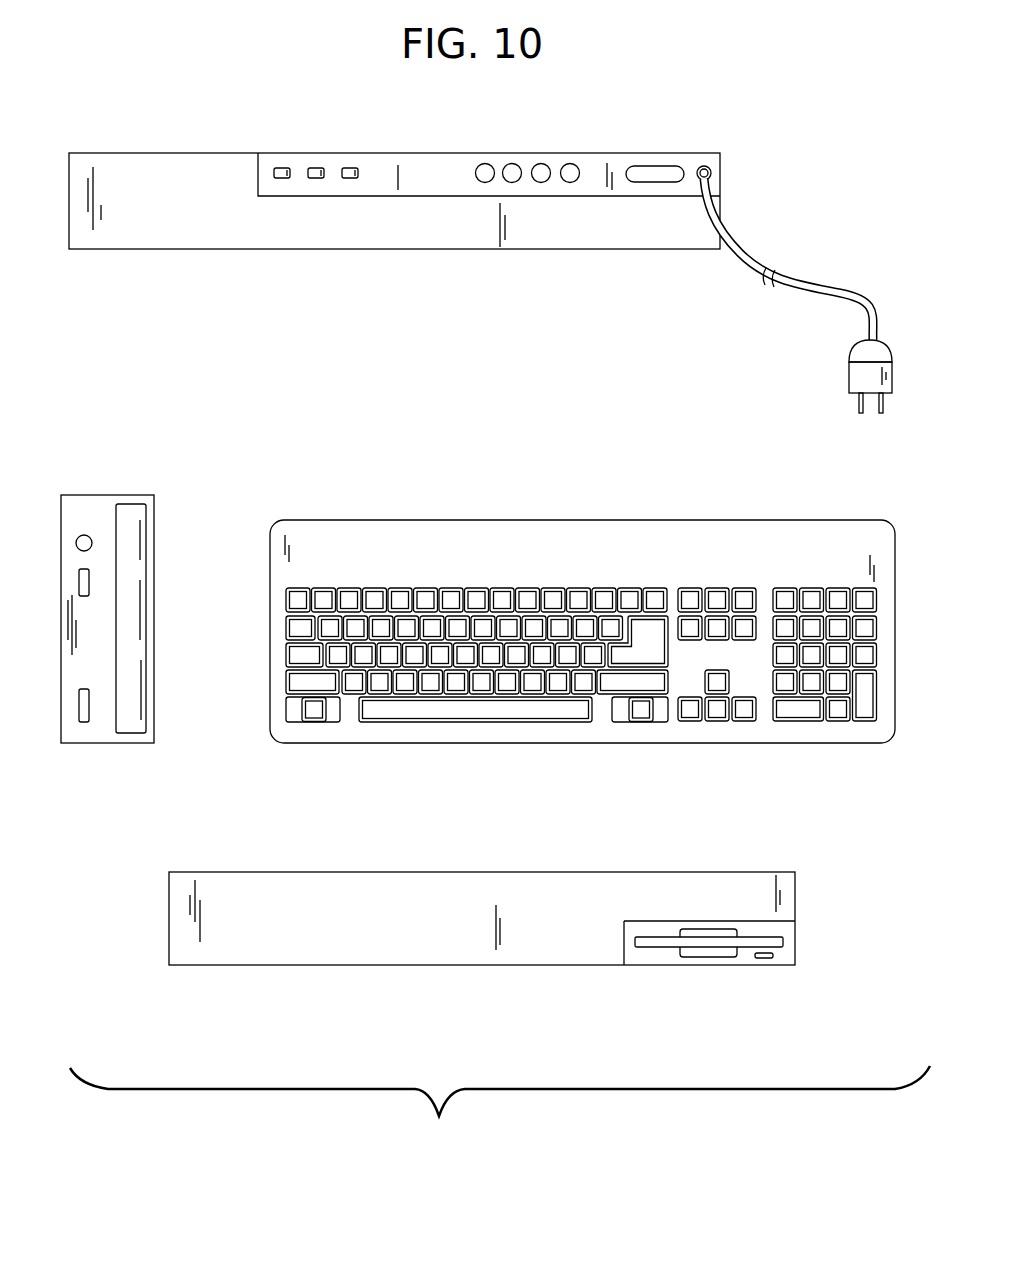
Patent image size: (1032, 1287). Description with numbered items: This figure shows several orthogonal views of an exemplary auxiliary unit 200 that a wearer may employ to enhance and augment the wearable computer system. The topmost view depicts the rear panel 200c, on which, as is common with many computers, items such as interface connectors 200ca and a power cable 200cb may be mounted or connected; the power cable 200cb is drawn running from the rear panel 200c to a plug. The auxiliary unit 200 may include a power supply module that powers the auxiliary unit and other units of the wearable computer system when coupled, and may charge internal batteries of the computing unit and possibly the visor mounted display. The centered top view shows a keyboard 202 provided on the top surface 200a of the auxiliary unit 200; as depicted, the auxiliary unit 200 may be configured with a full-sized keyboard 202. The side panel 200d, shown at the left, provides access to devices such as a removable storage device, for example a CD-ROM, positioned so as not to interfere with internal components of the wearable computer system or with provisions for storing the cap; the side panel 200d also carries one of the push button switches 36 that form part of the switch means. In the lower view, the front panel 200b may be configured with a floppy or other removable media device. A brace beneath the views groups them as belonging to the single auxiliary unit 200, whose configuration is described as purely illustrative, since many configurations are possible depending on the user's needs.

The auxiliary unit 200 is at (810, 775).
The top surface 200a is at (393, 547).
The front panel 200b is at (347, 920).
The rear panel 200c is at (314, 166).
The interface connectors 200ca is at (678, 170).
The power cable 200cb is at (862, 300).
The side panel 200d is at (104, 769).
The keyboard 202 is at (581, 551).
The push button switches 36 is at (80, 532).